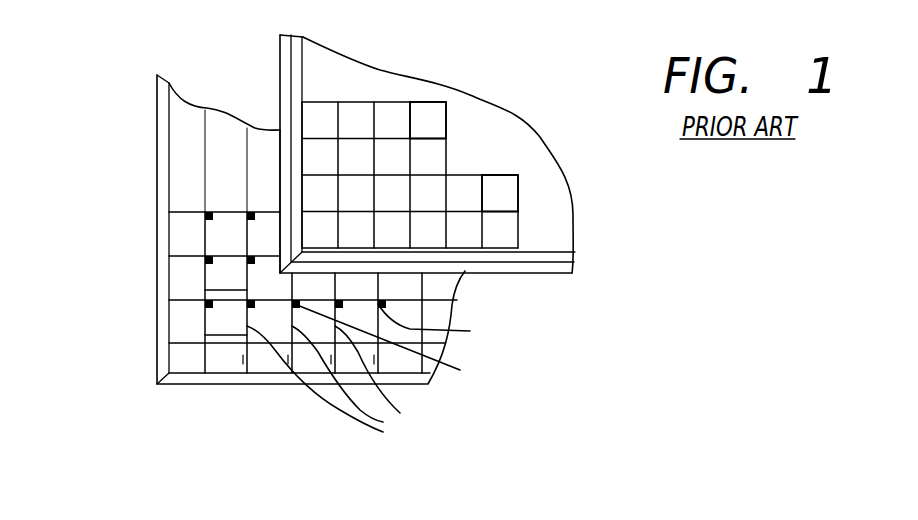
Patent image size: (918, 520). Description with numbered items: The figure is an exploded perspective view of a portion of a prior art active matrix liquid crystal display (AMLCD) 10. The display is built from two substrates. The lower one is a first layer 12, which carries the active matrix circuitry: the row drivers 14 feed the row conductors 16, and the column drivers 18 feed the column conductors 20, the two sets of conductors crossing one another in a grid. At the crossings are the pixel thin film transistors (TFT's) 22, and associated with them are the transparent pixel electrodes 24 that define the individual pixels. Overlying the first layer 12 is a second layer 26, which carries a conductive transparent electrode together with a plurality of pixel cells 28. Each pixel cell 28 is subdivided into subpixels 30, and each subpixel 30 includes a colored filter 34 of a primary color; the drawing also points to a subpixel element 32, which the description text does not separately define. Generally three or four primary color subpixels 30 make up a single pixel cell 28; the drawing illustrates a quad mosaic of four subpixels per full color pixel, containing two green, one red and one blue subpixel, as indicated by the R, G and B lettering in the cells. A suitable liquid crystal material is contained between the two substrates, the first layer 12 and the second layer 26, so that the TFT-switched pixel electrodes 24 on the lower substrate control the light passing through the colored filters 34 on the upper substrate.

The active matrix liquid crystal display 10 is at (113, 44).
The first layer 12 is at (157, 123).
The row drivers 14 is at (185, 342).
The row conductors 16 is at (205, 346).
The column drivers 18 is at (247, 356).
The column conductors 20 is at (334, 386).
The pixel thin film transistors 22 is at (402, 346).
The transparent pixel electrodes 24 is at (295, 274).
The second layer 26 is at (280, 50).
The pixel cells 28 is at (352, 84).
The subpixels 30 is at (268, 84).
The pixel 32 is at (412, 102).
The colored filter 34 is at (444, 108).